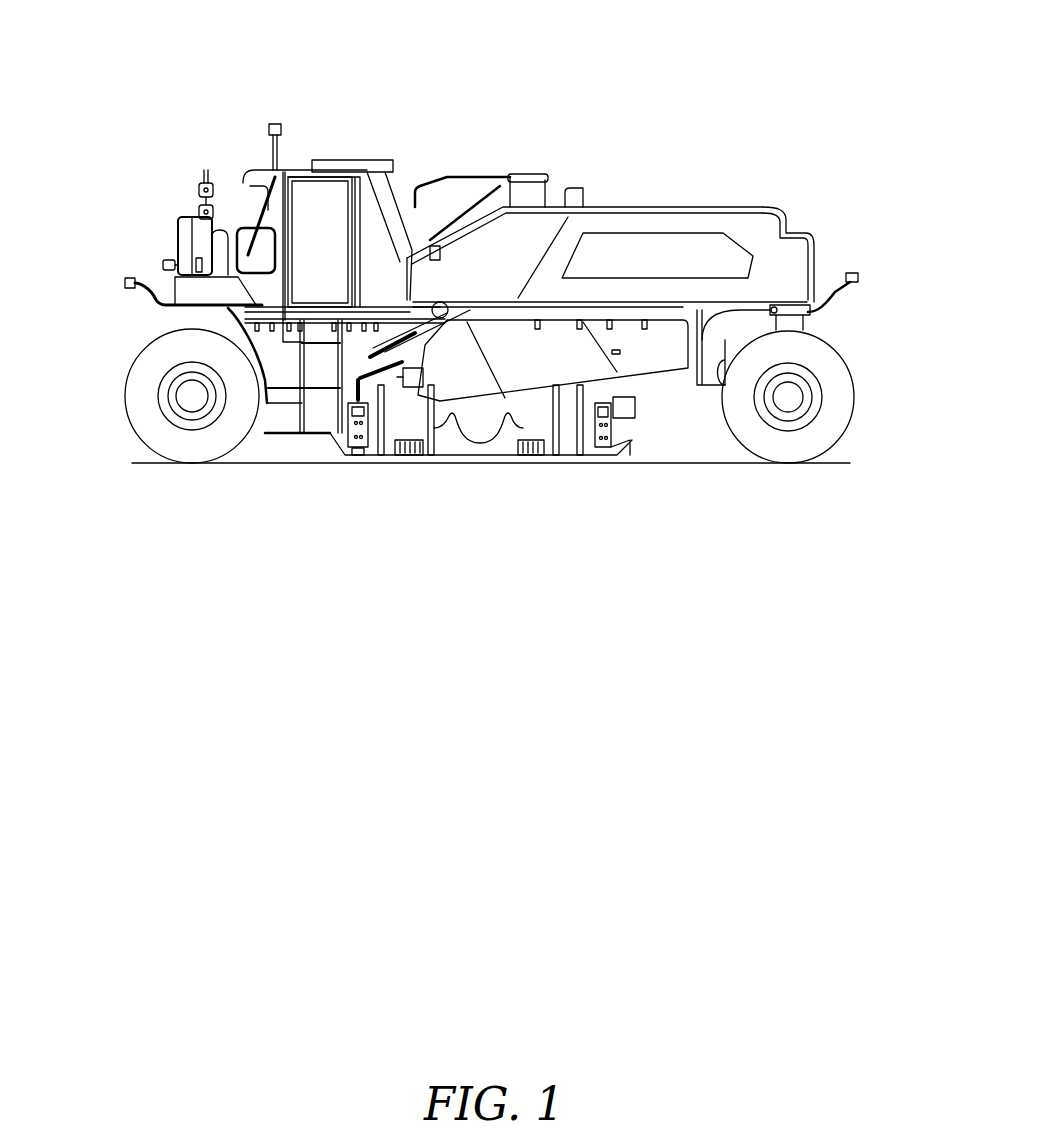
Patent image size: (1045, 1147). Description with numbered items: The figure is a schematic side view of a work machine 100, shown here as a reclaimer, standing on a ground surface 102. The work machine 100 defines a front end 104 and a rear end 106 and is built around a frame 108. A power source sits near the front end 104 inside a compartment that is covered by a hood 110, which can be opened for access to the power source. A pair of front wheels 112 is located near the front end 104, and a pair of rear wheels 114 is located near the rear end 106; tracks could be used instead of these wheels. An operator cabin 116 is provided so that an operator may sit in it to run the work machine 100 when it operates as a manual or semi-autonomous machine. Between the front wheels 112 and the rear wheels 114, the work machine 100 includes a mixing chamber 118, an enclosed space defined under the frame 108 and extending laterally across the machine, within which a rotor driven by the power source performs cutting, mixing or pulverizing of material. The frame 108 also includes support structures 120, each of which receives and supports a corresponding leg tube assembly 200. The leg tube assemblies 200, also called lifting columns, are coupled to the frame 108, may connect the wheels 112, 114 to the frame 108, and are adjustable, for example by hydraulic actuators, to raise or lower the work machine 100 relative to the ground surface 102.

The work machine 100 is at (822, 58).
The ground surface 102 is at (848, 463).
The front end 104 is at (112, 322).
The rear end 106 is at (865, 334).
The frame 108 is at (280, 378).
The hood 110 is at (775, 229).
The front wheels 112 is at (141, 401).
The rear wheels 114 is at (843, 397).
The operator cabin 116 is at (294, 172).
The mixing chamber 118 is at (453, 447).
The support structure 120 is at (185, 240).
The leg tube assembly 200 is at (174, 198).